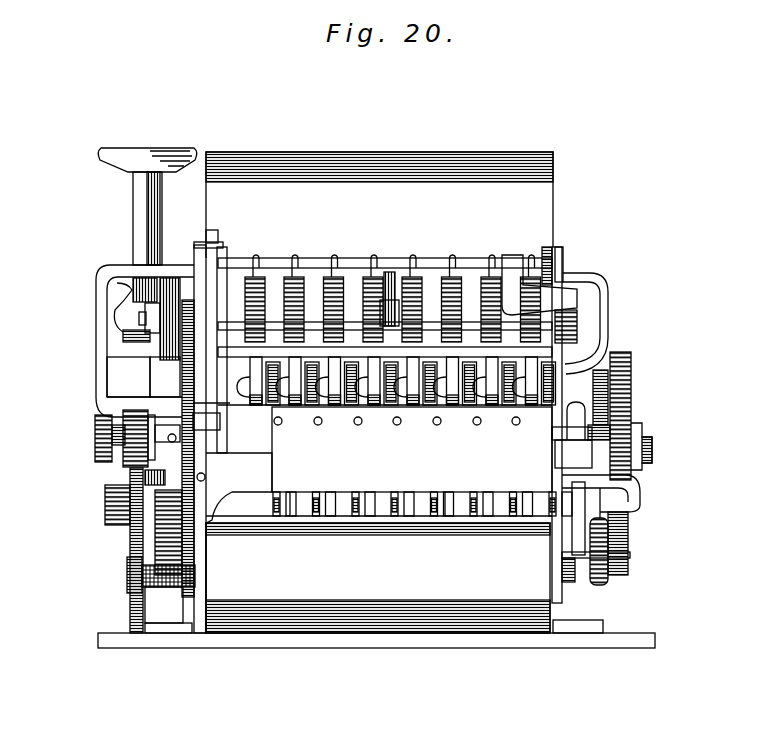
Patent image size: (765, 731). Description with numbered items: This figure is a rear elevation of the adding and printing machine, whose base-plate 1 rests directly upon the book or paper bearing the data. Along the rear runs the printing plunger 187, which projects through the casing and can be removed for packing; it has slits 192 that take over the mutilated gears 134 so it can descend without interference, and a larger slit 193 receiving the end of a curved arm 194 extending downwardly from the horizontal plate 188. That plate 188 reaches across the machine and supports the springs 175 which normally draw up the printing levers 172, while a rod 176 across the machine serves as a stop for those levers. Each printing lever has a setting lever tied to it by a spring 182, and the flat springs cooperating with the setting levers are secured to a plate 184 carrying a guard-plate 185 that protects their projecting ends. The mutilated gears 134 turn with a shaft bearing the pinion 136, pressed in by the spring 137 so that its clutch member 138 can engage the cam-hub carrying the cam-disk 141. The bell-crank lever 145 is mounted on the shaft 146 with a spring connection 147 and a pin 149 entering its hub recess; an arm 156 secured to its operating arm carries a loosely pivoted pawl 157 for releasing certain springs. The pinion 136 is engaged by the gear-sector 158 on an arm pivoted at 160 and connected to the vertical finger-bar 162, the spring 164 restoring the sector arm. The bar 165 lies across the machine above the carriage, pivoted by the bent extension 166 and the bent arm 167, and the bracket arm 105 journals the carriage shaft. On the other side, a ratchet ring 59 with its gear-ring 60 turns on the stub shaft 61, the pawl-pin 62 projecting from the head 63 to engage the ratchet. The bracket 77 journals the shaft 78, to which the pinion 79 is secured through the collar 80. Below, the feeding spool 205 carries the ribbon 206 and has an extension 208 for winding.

The base-plate 1 is at (502, 641).
The ratchet ring 59 is at (606, 370).
The gear-ring 60 is at (632, 382).
The stub shaft 61 is at (648, 472).
The pawl-pin 62 is at (587, 416).
The head 63 is at (582, 416).
The bracket 77 is at (642, 502).
The shaft 78 is at (596, 532).
The pinion 79 is at (628, 442).
The collar 80 is at (607, 476).
The bracket arm 105 is at (125, 378).
The mutilated gears 134 is at (353, 520).
The pinion 136 is at (130, 460).
The spring 137 is at (104, 438).
The clutch member 138 is at (190, 449).
The cam-disk 141 is at (126, 403).
The bell-crank lever 145 is at (195, 278).
The shaft 146 is at (132, 332).
The spring connection 147 is at (140, 344).
The pin 149 is at (148, 304).
The arm 156 is at (207, 421).
The pawl 157 is at (222, 435).
The gear-sector 158 is at (142, 540).
The pivot 160 is at (123, 497).
The finger-bar 162 is at (134, 216).
The spring 164 is at (198, 556).
The bar 165 is at (591, 272).
The bent extension 166 is at (610, 301).
The bent arm 167 is at (101, 287).
The printing levers 172 is at (291, 530).
The spring 175 is at (263, 283).
The rod 176 is at (473, 325).
The spring 182 is at (378, 402).
The plate 184 is at (268, 464).
The guard-plate 185 is at (447, 478).
The plunger 187 is at (409, 153).
The horizontal plate 188 is at (344, 262).
The slits 192 is at (462, 402).
The slit 193 is at (403, 312).
The curved arm 194 is at (389, 270).
The feeding spool 205 is at (206, 636).
The ribbon 206 is at (412, 620).
The extension 208 is at (128, 589).